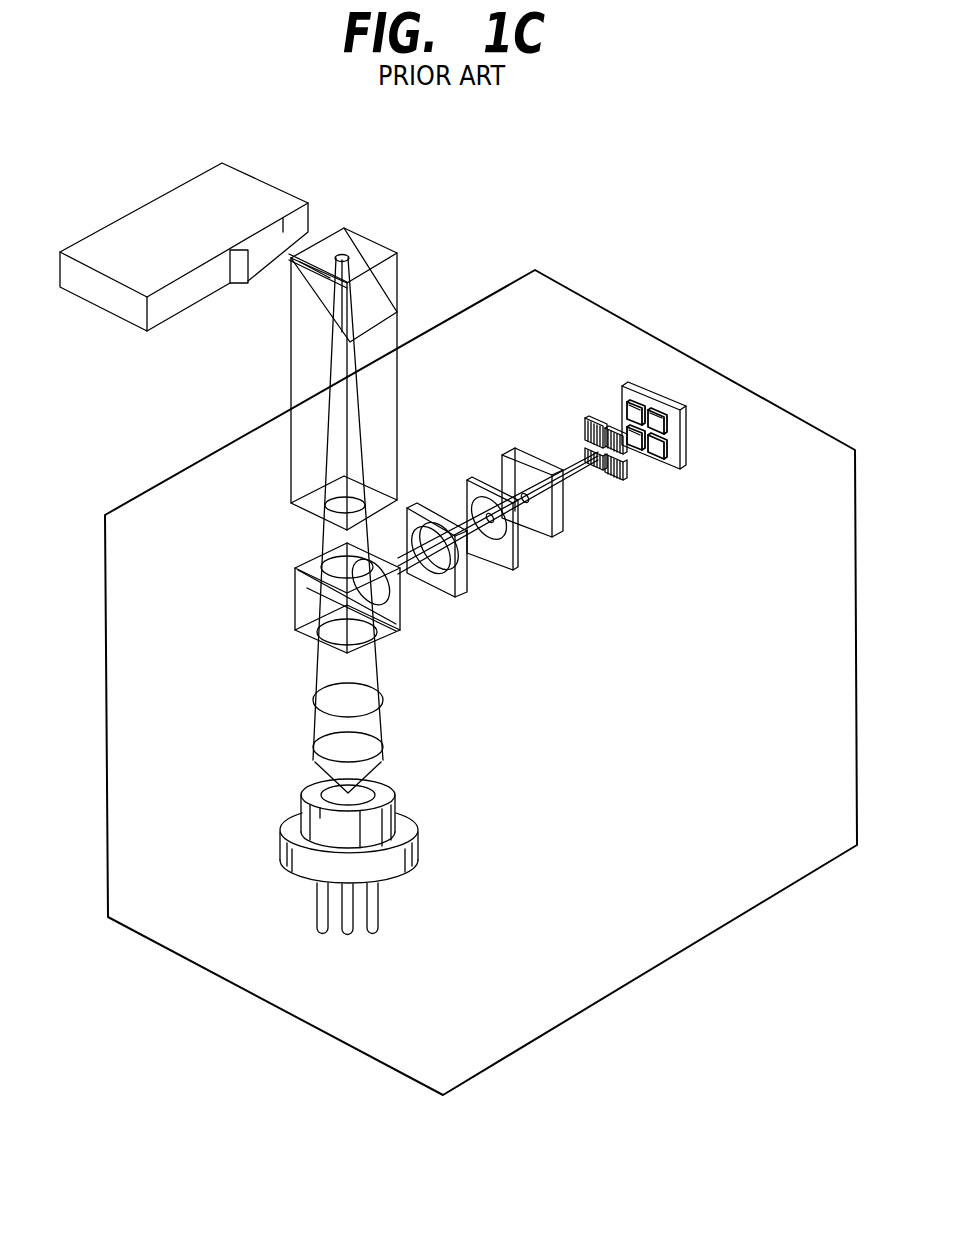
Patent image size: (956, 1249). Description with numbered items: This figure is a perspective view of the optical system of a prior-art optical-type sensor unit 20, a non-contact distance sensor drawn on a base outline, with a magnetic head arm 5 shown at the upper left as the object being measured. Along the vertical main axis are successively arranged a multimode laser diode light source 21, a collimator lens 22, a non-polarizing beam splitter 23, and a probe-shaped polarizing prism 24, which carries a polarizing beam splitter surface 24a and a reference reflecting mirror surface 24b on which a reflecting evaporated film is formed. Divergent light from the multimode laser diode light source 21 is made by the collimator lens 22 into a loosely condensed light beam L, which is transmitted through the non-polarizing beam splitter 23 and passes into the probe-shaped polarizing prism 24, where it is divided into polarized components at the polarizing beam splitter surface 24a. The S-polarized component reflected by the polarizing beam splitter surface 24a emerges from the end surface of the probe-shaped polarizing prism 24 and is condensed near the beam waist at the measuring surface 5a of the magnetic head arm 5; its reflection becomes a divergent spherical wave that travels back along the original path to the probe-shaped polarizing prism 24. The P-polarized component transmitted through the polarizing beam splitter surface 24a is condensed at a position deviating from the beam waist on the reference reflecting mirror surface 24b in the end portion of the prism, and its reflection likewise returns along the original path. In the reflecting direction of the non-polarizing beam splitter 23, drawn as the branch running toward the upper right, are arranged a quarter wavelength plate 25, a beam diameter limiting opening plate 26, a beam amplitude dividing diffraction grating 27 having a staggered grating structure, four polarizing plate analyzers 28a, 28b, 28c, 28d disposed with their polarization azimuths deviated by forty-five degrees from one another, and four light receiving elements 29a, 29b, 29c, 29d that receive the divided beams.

The magnetic head arm 5 is at (198, 180).
The measuring surface 5a is at (277, 220).
The optical-type sensor unit 20 is at (556, 280).
The multimode laser diode light source 21 is at (298, 822).
The collimator lens 22 is at (325, 727).
The non-polarizing beam splitter 23 is at (296, 603).
The probe-shaped polarizing prism 24 is at (339, 345).
The polarizing beam splitter surface 24a is at (292, 322).
The reference reflecting mirror surface 24b is at (370, 247).
The quarter wavelength plate 25 is at (452, 597).
The beam diameter limiting opening plate 26 is at (495, 553).
The beam amplitude dividing diffraction grating 27 is at (568, 543).
The polarizing plate analyzer 28a is at (612, 482).
The polarizing plate analyzer 28b is at (628, 466).
The polarizing plate analyzer 28c is at (583, 422).
The polarizing plate analyzer 28d is at (583, 452).
The light receiving element 29a is at (683, 452).
The light receiving element 29b is at (655, 412).
The light receiving element 29c is at (628, 392).
The light receiving element 29d is at (629, 432).
The light beam L is at (316, 672).